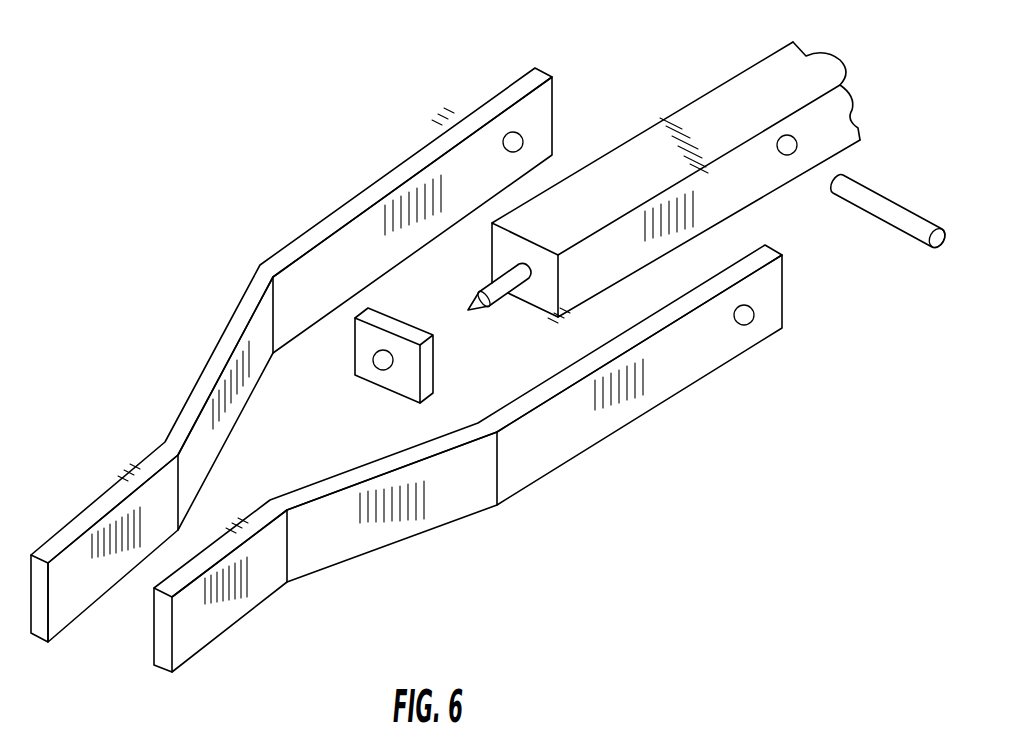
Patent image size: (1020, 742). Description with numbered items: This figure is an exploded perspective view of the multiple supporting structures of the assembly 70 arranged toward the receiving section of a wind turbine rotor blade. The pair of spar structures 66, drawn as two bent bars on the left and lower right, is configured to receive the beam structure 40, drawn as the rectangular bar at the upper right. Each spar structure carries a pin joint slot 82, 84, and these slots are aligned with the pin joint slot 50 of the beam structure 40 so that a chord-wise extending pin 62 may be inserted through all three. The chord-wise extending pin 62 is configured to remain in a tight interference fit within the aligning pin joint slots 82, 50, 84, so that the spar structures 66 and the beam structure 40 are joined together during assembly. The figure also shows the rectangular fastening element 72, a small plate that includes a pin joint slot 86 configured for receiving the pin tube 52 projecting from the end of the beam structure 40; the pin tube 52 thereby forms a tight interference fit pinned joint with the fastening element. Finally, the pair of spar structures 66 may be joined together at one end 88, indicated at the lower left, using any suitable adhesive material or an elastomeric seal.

The assembly 70 is at (176, 147).
The spar structures 66 is at (408, 381).
The pin joint slot 84 is at (512, 138).
The pin joint slot 82 is at (745, 322).
The end of spar structures 88 is at (83, 632).
The beam structure 40 is at (738, 85).
The pin joint slot 50 is at (786, 152).
The pin tube 52 is at (484, 307).
The chord-wise extending pin 62 is at (879, 203).
The rectangular fastening element 72 is at (414, 334).
The pin joint slot 86 is at (398, 384).